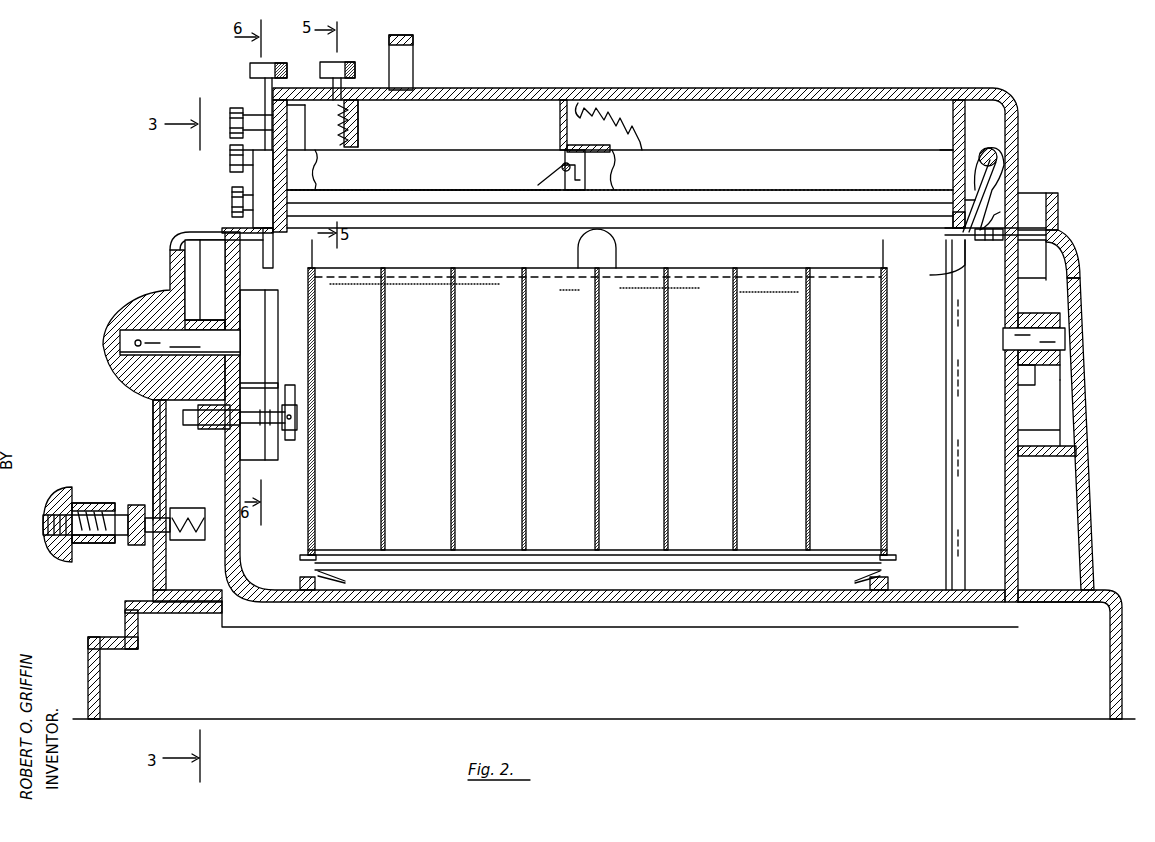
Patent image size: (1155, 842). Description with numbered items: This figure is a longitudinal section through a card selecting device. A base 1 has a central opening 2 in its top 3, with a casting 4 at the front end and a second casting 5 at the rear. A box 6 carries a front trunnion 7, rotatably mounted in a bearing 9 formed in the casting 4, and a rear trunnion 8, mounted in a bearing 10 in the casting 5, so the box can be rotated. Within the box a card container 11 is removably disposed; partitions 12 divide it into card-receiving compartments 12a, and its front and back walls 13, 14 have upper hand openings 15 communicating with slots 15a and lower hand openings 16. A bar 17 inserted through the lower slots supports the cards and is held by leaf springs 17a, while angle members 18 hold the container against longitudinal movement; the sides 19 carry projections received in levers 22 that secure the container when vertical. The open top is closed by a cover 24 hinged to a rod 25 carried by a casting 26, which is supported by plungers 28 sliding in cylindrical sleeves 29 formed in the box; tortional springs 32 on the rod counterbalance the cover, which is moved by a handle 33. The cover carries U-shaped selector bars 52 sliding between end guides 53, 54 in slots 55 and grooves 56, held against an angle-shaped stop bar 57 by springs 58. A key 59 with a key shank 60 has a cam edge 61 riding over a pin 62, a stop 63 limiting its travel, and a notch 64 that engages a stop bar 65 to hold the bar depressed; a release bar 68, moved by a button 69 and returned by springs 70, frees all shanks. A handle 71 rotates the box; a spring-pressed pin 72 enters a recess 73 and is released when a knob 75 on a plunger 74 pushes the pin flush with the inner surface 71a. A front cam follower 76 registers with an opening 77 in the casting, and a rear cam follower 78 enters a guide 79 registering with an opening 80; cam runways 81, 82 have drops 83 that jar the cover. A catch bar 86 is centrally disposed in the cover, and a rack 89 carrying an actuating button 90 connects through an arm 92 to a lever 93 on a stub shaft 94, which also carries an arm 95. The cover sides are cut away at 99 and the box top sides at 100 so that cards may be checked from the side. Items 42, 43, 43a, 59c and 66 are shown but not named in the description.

The base 1 is at (1122, 722).
The central opening 2 is at (225, 620).
The top of base 3 is at (1056, 604).
The casting 4 is at (170, 255).
The second casting 5 is at (1092, 515).
The box 6 is at (1018, 502).
The front trunnion 7 is at (118, 338).
The rear trunnion 8 is at (1065, 340).
The bearing 9 is at (203, 320).
The bearing 10 is at (1060, 365).
The card container 11 is at (887, 428).
The partitions 12 is at (451, 277).
The card-receiving compartments 12a is at (770, 277).
The front wall of container 13 is at (315, 508).
The back wall of container 14 is at (887, 490).
The upper hand openings 15 is at (318, 275).
The transversely extending slots 15a is at (318, 252).
The lower hand opening 16 is at (302, 556).
The bar 17 is at (590, 563).
The leaf springs 17a is at (340, 576).
The angle members 18 is at (306, 592).
The sides of card container 19 is at (542, 277).
The levers 22 is at (613, 241).
The cover 24 is at (827, 88).
The rod 25 is at (1018, 153).
The casting 26 is at (953, 172).
The plungers 28 is at (988, 240).
The cylindrical sleeves 29 is at (962, 356).
The tortional springs 32 is at (962, 188).
The handle 33 is at (413, 35).
The base foot 42 is at (95, 637).
The base step 43 is at (125, 625).
The base ledge 43a is at (135, 605).
The U-shaped member 52 is at (755, 150).
The end guide 53 is at (300, 92).
The end guide 54 is at (948, 100).
The slots 55 is at (300, 150).
The grooves 56 is at (950, 152).
The angle-shaped stop bar 57 is at (560, 115).
The springs 58 is at (615, 128).
The key 59 is at (230, 122).
The gear 59c is at (232, 195).
The key shank 60 is at (462, 150).
The cam edge 61 is at (538, 172).
The pin 62 is at (563, 165).
The stop 63 is at (583, 172).
The notch 64 is at (327, 158).
The stop bar 65 is at (360, 132).
The lid side wall 66 is at (273, 100).
The release bar 68 is at (355, 100).
The button 69 is at (345, 62).
The springs 70 is at (340, 120).
The handle 71 is at (150, 433).
The inner surface of handle 71a is at (150, 468).
The spring-pressed pin 72 is at (148, 540).
The recess 73 is at (140, 505).
The spring pressed plunger 74 is at (110, 543).
The knob 75 is at (43, 497).
The front cam follower 76 is at (208, 230).
The opening 77 is at (200, 230).
The second cam follower 78 is at (1034, 225).
The guide 79 is at (1060, 196).
The opening 80 is at (1068, 232).
The cam-shaped runway 81 is at (195, 245).
The cam-shaped runway 82 is at (1050, 258).
The steps or drops 83 is at (1045, 440).
The catch bar 86 is at (790, 217).
The rack 89 is at (273, 252).
The actuating button 90 is at (250, 70).
The arm 92 is at (278, 345).
The lever 93 is at (295, 395).
The stub shaft 94 is at (258, 410).
The arm 95 is at (198, 411).
The cut-away of cover sides 99 is at (945, 225).
The cut-away of box top sides 100 is at (960, 255).